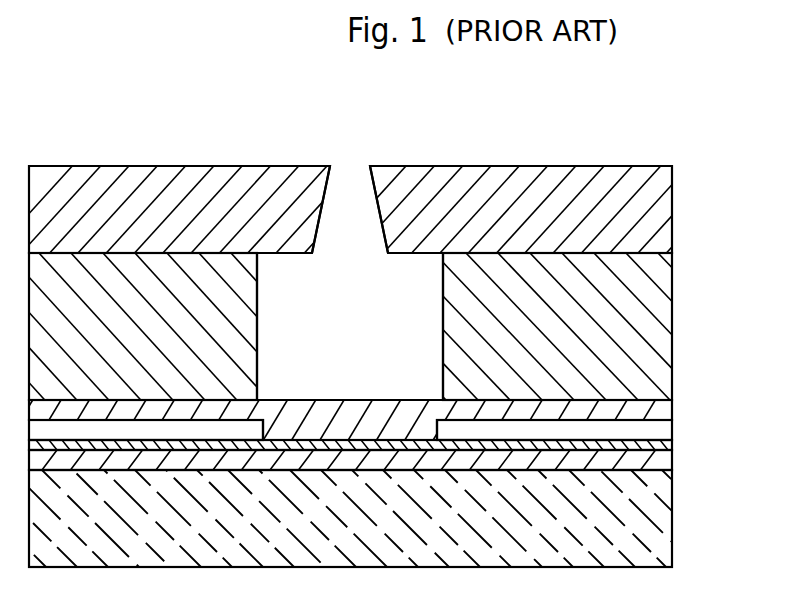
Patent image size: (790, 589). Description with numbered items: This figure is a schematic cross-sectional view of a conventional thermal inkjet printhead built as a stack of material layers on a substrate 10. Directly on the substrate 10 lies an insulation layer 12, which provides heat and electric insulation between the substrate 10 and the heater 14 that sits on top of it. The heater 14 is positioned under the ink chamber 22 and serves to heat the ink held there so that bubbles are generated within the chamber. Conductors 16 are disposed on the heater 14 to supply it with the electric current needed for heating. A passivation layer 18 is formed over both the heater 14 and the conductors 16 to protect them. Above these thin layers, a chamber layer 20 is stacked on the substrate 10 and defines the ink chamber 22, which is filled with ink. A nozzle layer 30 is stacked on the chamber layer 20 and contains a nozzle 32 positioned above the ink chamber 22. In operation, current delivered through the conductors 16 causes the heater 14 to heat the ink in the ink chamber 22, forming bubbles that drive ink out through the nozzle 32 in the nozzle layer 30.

The substrate 10 is at (657, 523).
The insulation layer 12 is at (663, 462).
The heater 14 is at (662, 443).
The conductors 16 is at (662, 430).
The passivation layer 18 is at (662, 408).
The chamber layer 20 is at (657, 328).
The ink chamber 22 is at (336, 338).
The nozzle layer 30 is at (657, 212).
The nozzle 32 is at (377, 207).